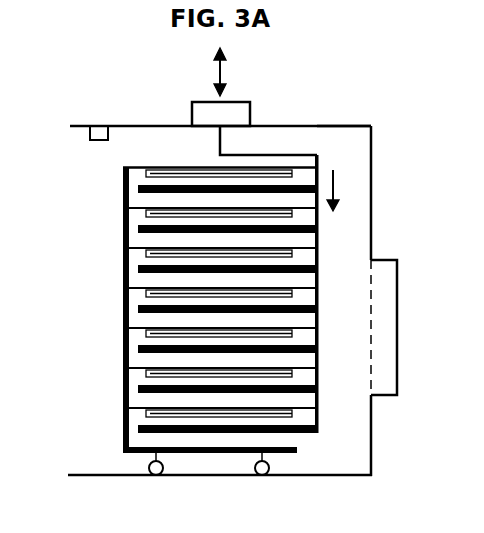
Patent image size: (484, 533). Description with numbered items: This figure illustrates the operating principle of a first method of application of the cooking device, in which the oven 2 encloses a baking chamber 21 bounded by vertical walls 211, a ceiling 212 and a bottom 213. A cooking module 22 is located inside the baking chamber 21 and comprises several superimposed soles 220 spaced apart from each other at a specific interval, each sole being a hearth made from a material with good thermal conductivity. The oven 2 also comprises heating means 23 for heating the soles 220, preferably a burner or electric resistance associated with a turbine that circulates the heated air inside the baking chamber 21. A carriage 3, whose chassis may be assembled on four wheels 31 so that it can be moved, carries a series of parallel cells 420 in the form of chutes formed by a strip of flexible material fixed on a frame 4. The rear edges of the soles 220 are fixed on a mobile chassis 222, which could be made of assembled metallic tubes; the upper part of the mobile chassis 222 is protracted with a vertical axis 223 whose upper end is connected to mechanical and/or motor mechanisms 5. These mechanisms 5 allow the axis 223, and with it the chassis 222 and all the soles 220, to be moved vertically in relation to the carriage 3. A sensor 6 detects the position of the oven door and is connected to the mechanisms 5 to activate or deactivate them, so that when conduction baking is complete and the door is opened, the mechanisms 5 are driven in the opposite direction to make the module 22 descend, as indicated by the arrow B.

The oven 2 is at (75, 119).
The carriage 3 is at (123, 357).
The substrate 4 is at (177, 172).
The parallel cells 420 is at (177, 214).
The vertical movement mechanisms 5 is at (230, 113).
The sensor 6 is at (93, 141).
The baking chamber 21 is at (354, 214).
The cooking module 22 is at (318, 410).
The heating means 23 is at (397, 328).
The wheels 31 is at (150, 469).
The vertical walls 211 is at (373, 167).
The ceiling 212 is at (345, 125).
The bottom 213 is at (342, 477).
The soles 220 is at (308, 243).
The mobile chassis 222 is at (319, 165).
The vertical axis 223 is at (223, 140).